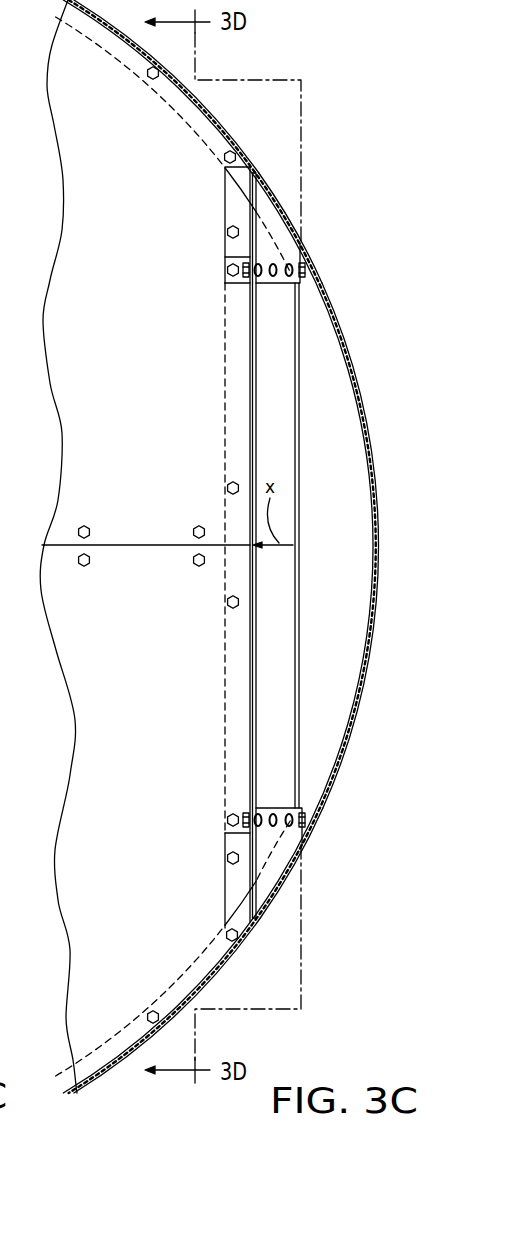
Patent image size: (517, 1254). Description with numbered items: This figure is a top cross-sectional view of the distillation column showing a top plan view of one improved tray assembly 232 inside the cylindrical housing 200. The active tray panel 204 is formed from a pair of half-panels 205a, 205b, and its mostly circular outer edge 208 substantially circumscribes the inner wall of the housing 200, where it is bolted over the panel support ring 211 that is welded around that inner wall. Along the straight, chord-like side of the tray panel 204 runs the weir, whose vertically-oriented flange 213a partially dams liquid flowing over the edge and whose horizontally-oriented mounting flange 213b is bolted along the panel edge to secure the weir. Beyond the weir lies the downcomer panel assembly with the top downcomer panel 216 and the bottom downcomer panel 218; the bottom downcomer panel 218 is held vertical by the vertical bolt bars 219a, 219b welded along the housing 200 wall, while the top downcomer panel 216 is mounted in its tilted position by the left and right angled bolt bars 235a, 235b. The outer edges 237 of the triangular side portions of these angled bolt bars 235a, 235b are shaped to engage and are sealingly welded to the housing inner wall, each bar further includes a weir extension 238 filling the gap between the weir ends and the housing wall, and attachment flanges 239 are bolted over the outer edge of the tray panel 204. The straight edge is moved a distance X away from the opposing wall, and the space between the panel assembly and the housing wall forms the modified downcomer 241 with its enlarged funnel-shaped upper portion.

The cylindrical housing 200 is at (200, 100).
The circular outer edge 208 is at (214, 117).
The panel support ring 211 is at (238, 133).
The weir extension 238 is at (253, 193).
The outer edge of triangular side portion 237 is at (273, 225).
The right angled bolt bar 235b is at (273, 239).
The left angled bolt bar 235a is at (276, 860).
The vertical bolt bar 219b is at (312, 257).
The vertical bolt bar 219a is at (318, 838).
The attachment flange 239 is at (233, 205).
The half-panel 205a is at (145, 317).
The half-panel 205b is at (162, 712).
The improved tray assembly 232 is at (252, 400).
The vertically-oriented flange 213a is at (250, 440).
The horizontally-oriented mounting flange 213b is at (230, 455).
The active tray panel 204 is at (70, 545).
The modified downcomer 241 is at (350, 549).
The top downcomer panel 216 is at (278, 611).
The bottom downcomer panel 218 is at (298, 697).